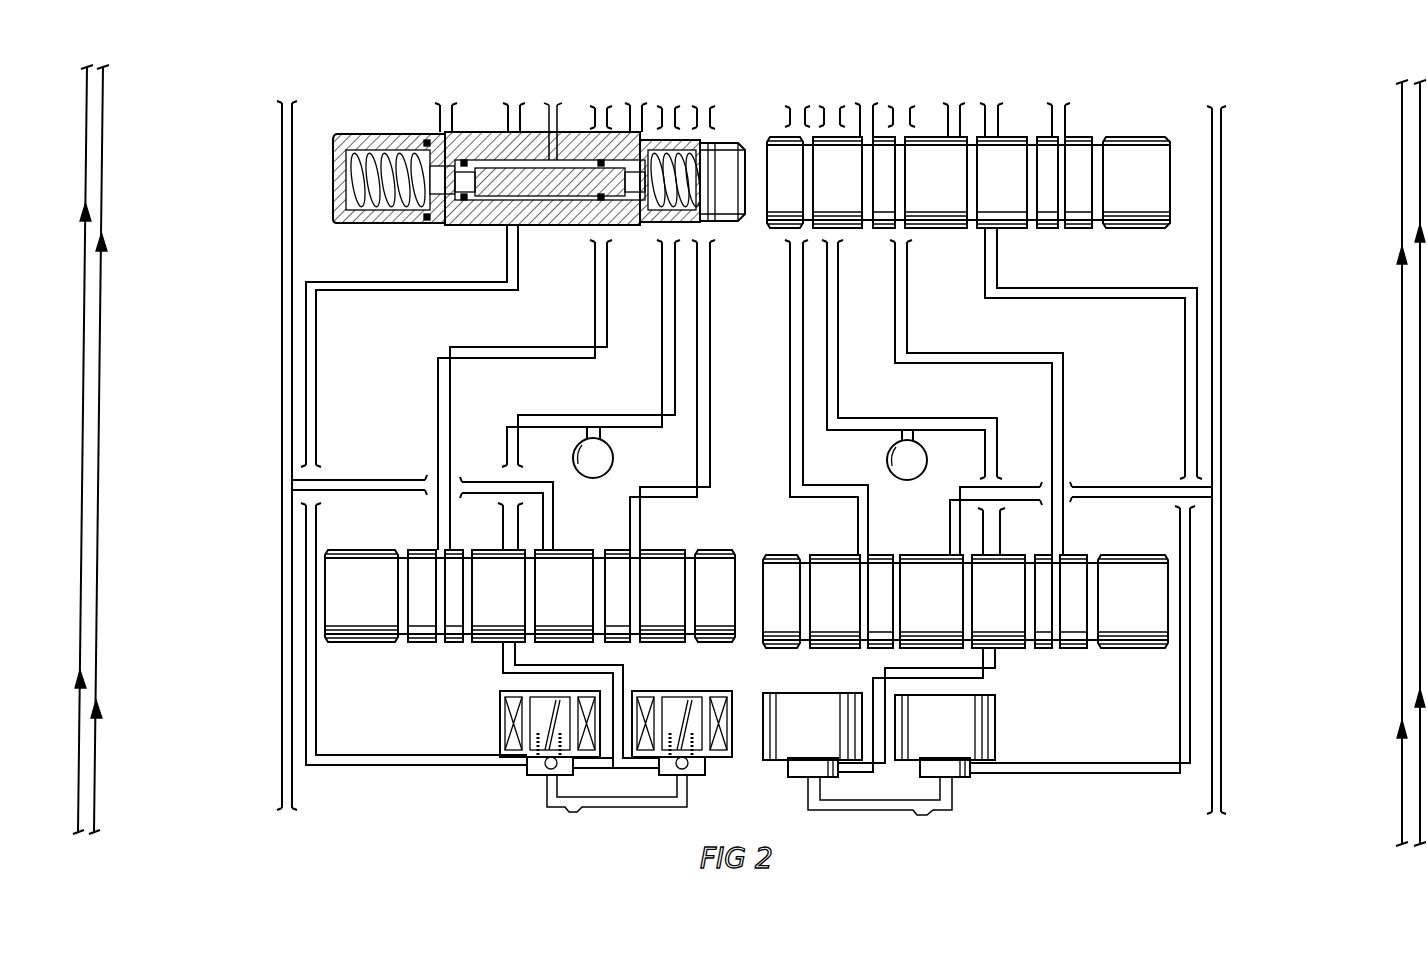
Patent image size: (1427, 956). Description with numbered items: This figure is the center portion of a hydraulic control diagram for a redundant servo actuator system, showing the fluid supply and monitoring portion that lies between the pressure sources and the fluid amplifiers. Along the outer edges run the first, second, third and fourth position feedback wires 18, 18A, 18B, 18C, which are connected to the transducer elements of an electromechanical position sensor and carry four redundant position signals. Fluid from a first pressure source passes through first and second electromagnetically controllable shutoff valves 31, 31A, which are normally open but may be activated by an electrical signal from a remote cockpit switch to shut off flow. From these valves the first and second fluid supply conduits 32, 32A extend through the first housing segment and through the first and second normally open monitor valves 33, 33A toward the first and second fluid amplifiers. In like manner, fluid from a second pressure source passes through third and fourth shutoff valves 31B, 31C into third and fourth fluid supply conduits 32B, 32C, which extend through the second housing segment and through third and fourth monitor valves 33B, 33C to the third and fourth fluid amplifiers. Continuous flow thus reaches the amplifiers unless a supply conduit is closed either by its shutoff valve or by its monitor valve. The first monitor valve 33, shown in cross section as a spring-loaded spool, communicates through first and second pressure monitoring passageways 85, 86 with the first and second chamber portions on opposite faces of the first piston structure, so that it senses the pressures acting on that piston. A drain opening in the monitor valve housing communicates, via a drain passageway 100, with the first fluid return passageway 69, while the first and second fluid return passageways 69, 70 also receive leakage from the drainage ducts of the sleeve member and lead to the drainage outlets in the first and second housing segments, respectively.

The first position feedback wire 18 is at (103, 381).
The second position feedback wire 18A is at (87, 352).
The third position feedback wire 18B is at (1420, 354).
The fourth position feedback wire 18C is at (1402, 384).
The first electromagnetically controllable shutoff valve 31 is at (500, 718).
The second electromagnetically controllable shutoff valve 31A is at (678, 692).
The third shutoff valve 31B is at (812, 693).
The fourth shutoff valve 31C is at (995, 722).
The first fluid supply conduit 32 is at (506, 113).
The second fluid supply conduit 32A is at (680, 113).
The third fluid supply conduit 32B is at (829, 112).
The fourth fluid supply conduit 32C is at (1000, 118).
The first monitor valve 33 is at (380, 229).
The second monitor valve 33A is at (655, 550).
The third monitor valve 33B is at (840, 555).
The fourth monitor valve 33C is at (1122, 230).
The first fluid return passageway 69 is at (282, 522).
The second fluid return passageway 70 is at (1221, 546).
The first pressure monitoring passageway 85 is at (435, 113).
The second pressure monitoring passageway 86 is at (641, 112).
The drain passageway 100 is at (557, 113).